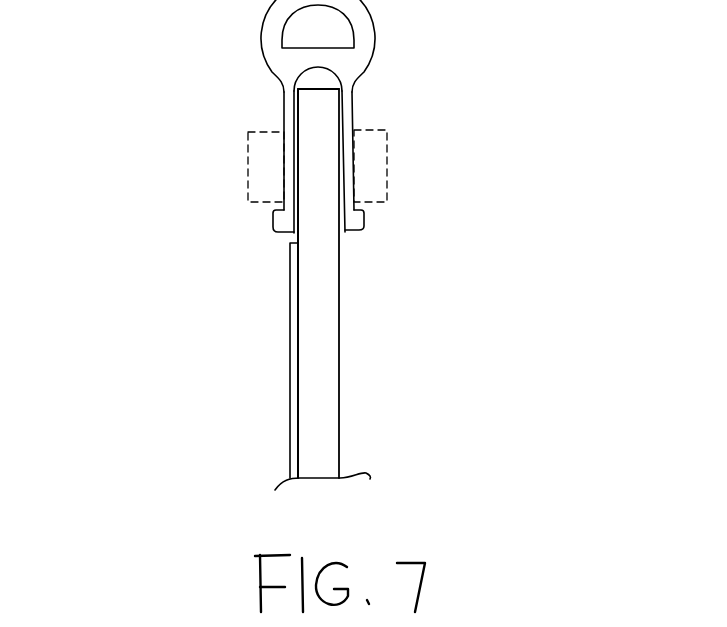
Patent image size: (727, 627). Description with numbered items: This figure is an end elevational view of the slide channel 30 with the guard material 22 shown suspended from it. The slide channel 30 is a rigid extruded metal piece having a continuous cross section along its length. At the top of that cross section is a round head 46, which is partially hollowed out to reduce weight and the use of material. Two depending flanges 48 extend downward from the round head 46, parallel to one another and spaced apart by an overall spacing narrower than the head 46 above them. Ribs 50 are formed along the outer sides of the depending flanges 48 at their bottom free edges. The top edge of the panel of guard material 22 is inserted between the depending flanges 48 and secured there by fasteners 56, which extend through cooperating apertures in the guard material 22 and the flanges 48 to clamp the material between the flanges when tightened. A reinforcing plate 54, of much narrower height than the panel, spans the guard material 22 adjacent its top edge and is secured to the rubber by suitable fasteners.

The guard material 22 is at (327, 383).
The slide channel 30 is at (310, 183).
The round head 46 is at (270, 33).
The depending flanges 48 is at (283, 111).
The ribs 50 is at (281, 224).
The reinforcing plate 54 is at (292, 369).
The fasteners 56 is at (248, 170).